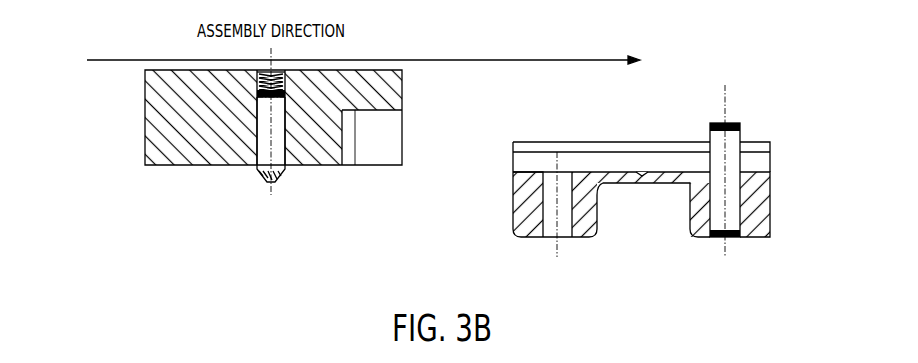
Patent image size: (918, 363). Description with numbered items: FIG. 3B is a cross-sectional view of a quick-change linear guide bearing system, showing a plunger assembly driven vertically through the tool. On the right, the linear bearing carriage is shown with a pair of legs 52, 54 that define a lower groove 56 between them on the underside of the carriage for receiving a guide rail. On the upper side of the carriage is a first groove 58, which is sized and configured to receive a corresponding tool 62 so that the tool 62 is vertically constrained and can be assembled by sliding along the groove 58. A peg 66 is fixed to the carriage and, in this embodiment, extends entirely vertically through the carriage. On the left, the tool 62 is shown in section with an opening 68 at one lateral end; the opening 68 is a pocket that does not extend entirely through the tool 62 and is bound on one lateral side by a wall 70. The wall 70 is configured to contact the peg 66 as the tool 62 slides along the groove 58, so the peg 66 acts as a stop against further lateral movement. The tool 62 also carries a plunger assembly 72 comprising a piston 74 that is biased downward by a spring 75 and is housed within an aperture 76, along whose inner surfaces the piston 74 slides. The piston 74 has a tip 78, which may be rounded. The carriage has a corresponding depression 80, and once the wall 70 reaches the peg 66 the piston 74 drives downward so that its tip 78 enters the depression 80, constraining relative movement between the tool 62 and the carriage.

The leg 52 is at (760, 232).
The leg 54 is at (525, 232).
The lower groove 56 is at (662, 224).
The first groove 58 is at (772, 164).
The tool 62 is at (182, 197).
The peg 66 is at (729, 138).
The opening 68 is at (380, 140).
The wall 70 is at (343, 147).
The plunger assembly 72 is at (246, 168).
The piston 74 is at (283, 112).
The spring 75 is at (267, 86).
The aperture 76 is at (274, 78).
The tip 78 is at (273, 185).
The depression 80 is at (640, 183).